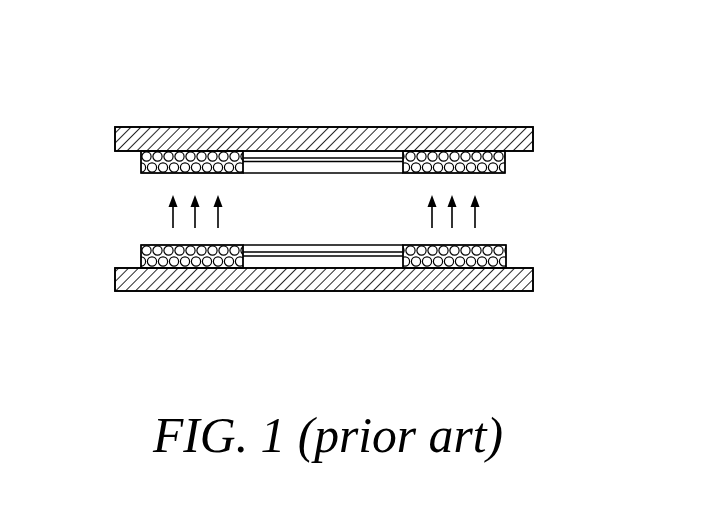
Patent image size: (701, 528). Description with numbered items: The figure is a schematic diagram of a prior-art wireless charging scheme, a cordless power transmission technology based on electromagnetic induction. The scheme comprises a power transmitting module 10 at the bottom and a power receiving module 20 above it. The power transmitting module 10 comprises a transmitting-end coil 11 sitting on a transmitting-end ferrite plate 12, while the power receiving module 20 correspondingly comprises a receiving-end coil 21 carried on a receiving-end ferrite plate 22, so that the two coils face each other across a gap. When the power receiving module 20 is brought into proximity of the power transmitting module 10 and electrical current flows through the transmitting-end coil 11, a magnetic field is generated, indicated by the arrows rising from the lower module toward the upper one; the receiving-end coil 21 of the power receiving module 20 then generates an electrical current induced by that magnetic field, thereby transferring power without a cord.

The power transmitting module 10 is at (326, 297).
The transmitting-end coil 11 is at (141, 247).
The transmitting-end ferrite plate 12 is at (347, 292).
The power receiving module 20 is at (320, 104).
The receiving-end coil 21 is at (143, 162).
The receiving-end ferrite plate 22 is at (352, 127).